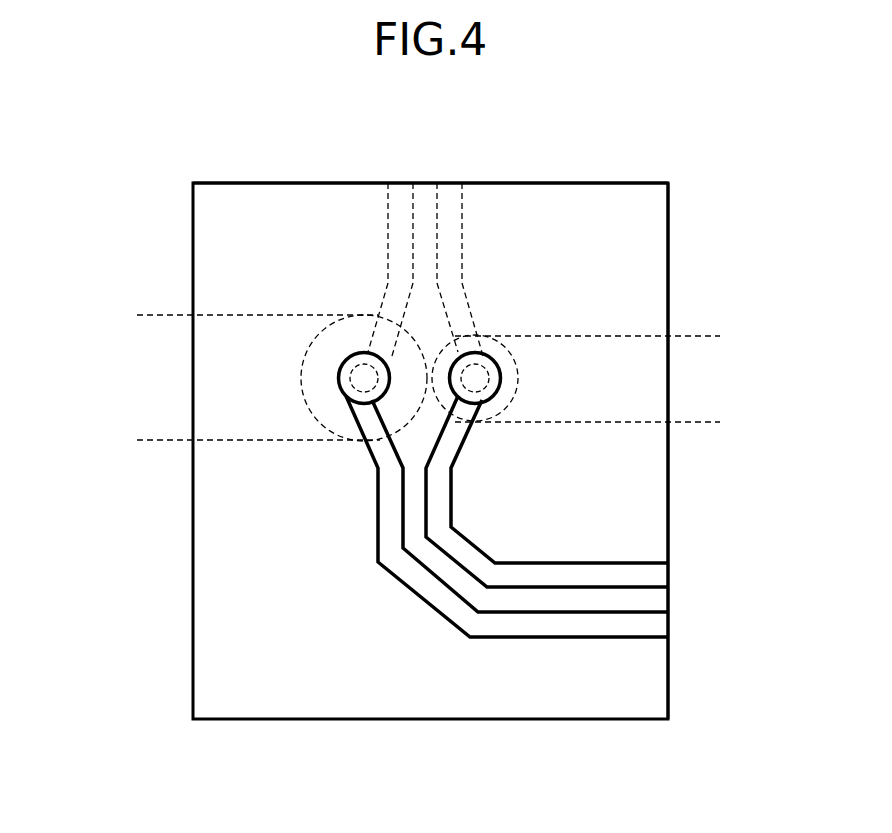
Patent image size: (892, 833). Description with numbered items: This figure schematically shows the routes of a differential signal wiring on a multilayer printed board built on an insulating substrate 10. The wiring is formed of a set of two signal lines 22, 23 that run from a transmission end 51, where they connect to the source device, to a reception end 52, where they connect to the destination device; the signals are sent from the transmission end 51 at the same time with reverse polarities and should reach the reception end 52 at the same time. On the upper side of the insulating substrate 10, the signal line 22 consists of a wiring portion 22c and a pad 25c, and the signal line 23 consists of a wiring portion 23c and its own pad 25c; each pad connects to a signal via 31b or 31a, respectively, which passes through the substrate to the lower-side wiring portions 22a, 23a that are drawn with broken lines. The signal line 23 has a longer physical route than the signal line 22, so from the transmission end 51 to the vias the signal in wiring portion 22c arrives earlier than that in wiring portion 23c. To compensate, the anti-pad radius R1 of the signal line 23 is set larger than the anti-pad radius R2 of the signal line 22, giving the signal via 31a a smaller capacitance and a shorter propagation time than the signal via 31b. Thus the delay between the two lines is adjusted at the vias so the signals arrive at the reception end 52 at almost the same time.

The insulating substrate 10 is at (242, 720).
The transmission end 51 is at (668, 540).
The reception end 52 is at (491, 183).
The signal line 22 is at (634, 385).
The wiring portion 22a is at (457, 305).
The wiring portion 22c is at (438, 494).
The signal line 23 is at (343, 410).
The wiring portion 23a is at (395, 302).
The wiring portion 23c is at (393, 505).
The pad 25c is at (344, 386).
The signal via 31a is at (350, 376).
The signal via 31b is at (489, 372).
The anti-pad radius R1 is at (158, 315).
The anti-pad radius R2 is at (702, 336).